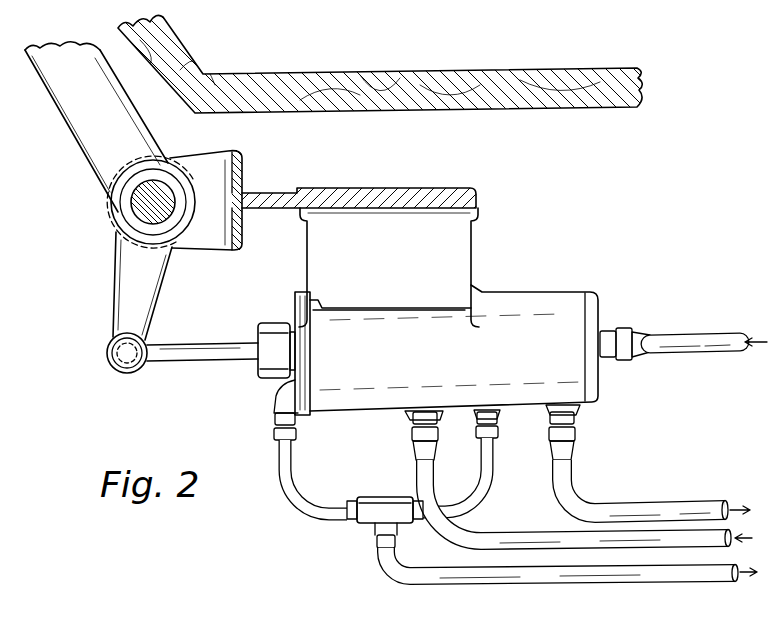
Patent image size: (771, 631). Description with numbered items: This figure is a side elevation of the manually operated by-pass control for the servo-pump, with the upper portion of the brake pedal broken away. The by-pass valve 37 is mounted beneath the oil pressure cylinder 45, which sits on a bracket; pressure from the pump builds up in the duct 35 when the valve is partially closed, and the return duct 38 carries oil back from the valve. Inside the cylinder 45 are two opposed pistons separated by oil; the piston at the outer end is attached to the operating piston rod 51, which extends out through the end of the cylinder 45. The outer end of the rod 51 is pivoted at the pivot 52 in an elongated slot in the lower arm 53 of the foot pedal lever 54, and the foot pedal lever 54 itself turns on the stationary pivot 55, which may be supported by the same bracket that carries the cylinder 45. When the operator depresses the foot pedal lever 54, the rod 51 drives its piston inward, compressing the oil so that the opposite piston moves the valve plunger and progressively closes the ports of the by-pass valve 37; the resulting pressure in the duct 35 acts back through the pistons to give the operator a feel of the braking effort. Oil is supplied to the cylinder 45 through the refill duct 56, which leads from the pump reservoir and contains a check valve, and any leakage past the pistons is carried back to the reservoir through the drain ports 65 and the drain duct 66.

The duct 35 is at (681, 340).
The by-pass valve 37 is at (565, 312).
The return duct 38 is at (567, 487).
The oil pressure cylinder 45 is at (416, 357).
The operating piston rod 51 is at (218, 352).
The pivot 52 is at (124, 357).
The lower arm 53 is at (140, 284).
The foot pedal lever 54 is at (97, 130).
The stationary pivot 55 is at (142, 200).
The refill duct 56 is at (462, 533).
The drain ports 65 is at (272, 428).
The drain duct 66 is at (490, 576).